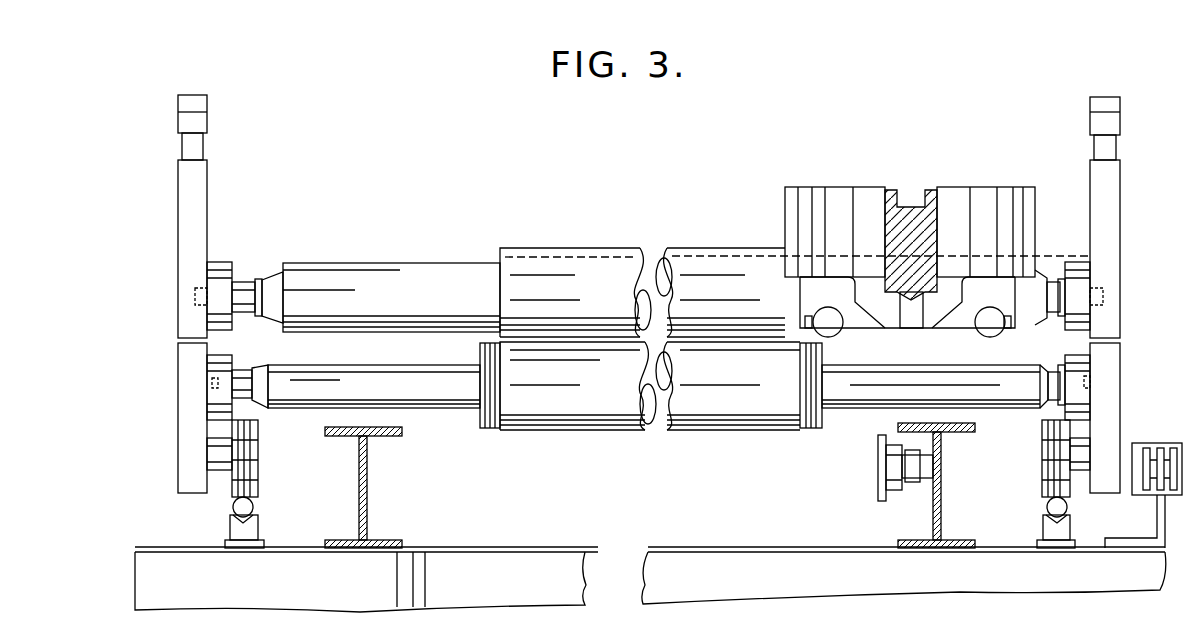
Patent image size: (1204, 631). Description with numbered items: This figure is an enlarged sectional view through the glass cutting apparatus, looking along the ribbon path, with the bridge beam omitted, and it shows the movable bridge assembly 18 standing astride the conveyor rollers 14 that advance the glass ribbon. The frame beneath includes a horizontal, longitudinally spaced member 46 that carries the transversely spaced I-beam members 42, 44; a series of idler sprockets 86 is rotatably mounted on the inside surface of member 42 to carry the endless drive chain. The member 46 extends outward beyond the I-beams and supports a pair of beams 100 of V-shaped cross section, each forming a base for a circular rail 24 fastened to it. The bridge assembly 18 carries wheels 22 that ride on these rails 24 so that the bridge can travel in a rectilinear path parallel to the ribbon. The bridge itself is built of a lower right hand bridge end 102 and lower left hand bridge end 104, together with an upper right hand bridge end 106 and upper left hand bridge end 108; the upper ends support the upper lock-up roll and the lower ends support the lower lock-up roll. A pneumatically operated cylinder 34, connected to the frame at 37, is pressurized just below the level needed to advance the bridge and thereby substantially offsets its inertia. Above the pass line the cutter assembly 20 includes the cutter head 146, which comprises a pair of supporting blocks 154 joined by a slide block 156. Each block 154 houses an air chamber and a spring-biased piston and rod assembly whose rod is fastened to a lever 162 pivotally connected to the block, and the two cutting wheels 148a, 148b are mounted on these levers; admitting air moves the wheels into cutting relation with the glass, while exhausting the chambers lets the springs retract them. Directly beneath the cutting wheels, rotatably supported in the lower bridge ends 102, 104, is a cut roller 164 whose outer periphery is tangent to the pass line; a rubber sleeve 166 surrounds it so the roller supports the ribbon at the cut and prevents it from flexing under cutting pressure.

The bridge assembly 18 is at (160, 178).
The upper left hand bridge end 108 is at (184, 216).
The lower left hand bridge end 104 is at (184, 374).
The upper right hand bridge end 106 is at (1122, 208).
The lower right hand bridge end 102 is at (1120, 384).
The conveyor rollers 14 is at (590, 250).
The cut roller 164 is at (535, 433).
The rubber sleeve 166 is at (497, 436).
The cutter assembly 20 is at (878, 152).
The supporting blocks 154 is at (875, 186).
The cutter head 146 is at (898, 176).
The slide block 156 is at (905, 195).
The lever 162 is at (964, 305).
The cutting wheel 148b is at (836, 332).
The cutting wheel 148a is at (990, 335).
The wheels 22 is at (262, 448).
The circular rails 24 is at (250, 506).
The beams 100 is at (255, 530).
The horizontal transversely spaced I-beam member 44 is at (370, 484).
The horizontal transversely spaced I-beam member 42 is at (940, 470).
The idler sprockets 86 is at (878, 470).
The pneumatically operated cylinder 34 is at (1145, 443).
The cylinder connection to frame 37 is at (1160, 490).
The horizontal longitudinally spaced member 46 is at (568, 547).